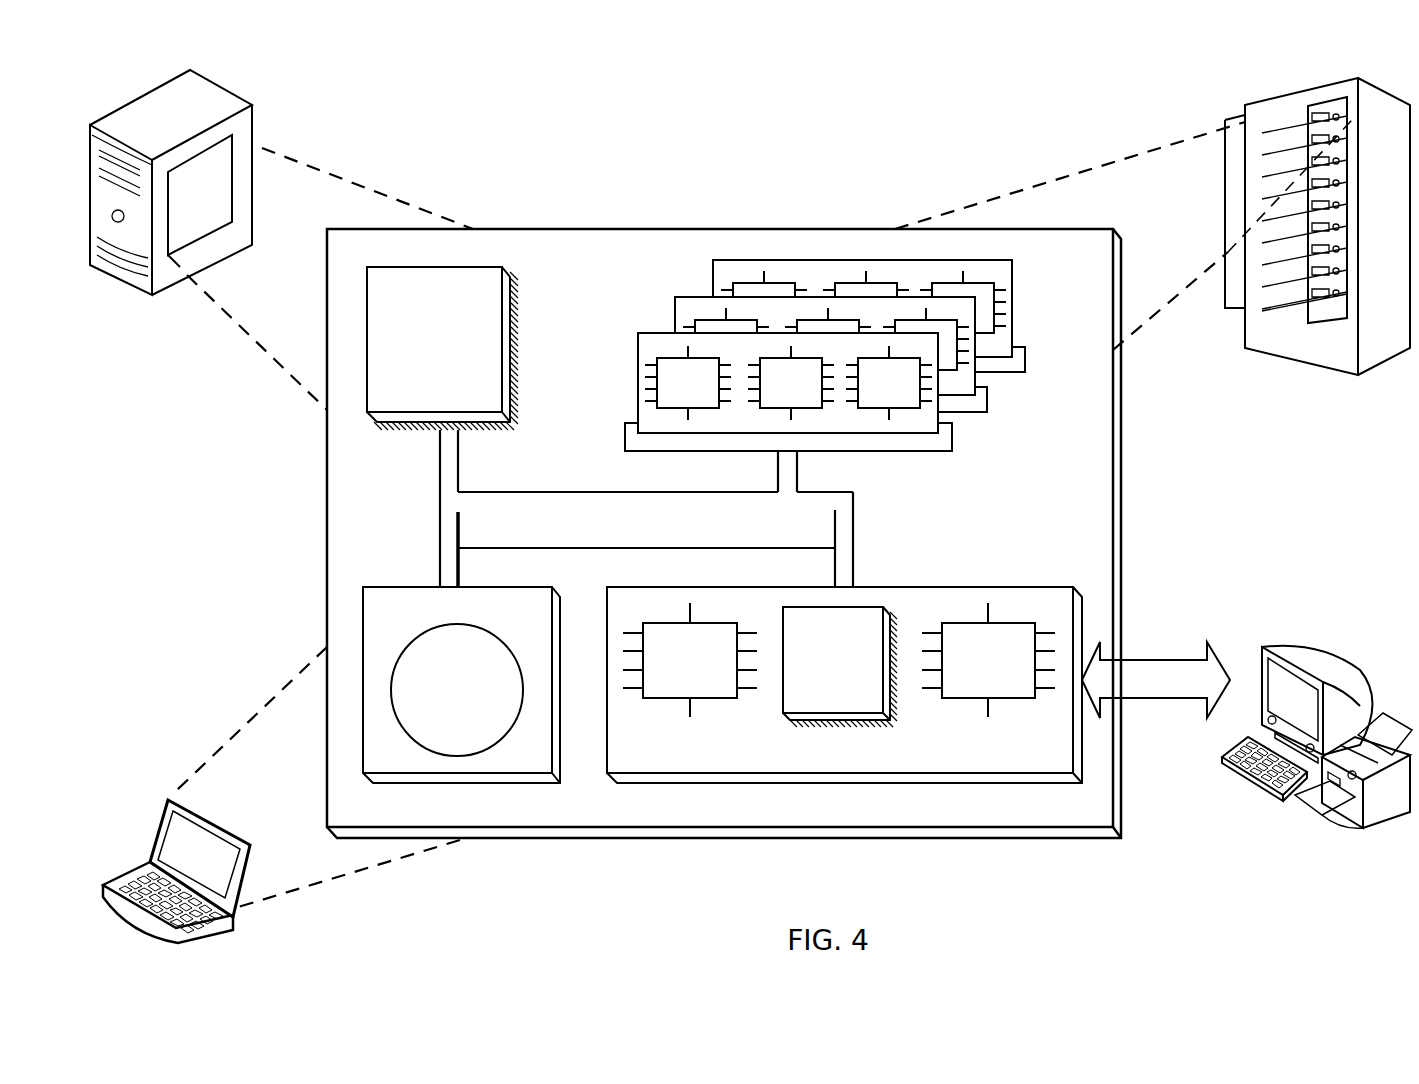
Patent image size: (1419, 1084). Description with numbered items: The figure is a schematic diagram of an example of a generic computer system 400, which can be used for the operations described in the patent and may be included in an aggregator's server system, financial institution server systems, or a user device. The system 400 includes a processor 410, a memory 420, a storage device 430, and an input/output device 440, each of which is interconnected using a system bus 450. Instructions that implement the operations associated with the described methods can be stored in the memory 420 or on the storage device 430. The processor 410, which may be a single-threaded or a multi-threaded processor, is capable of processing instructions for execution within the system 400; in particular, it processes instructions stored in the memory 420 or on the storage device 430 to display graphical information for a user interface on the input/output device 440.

The generic computer system 400 is at (531, 90).
The processor 410 is at (442, 348).
The memory 420 is at (1021, 403).
The storage device 430 is at (461, 685).
The input/output device 440 is at (1262, 648).
The system bus 450 is at (652, 500).